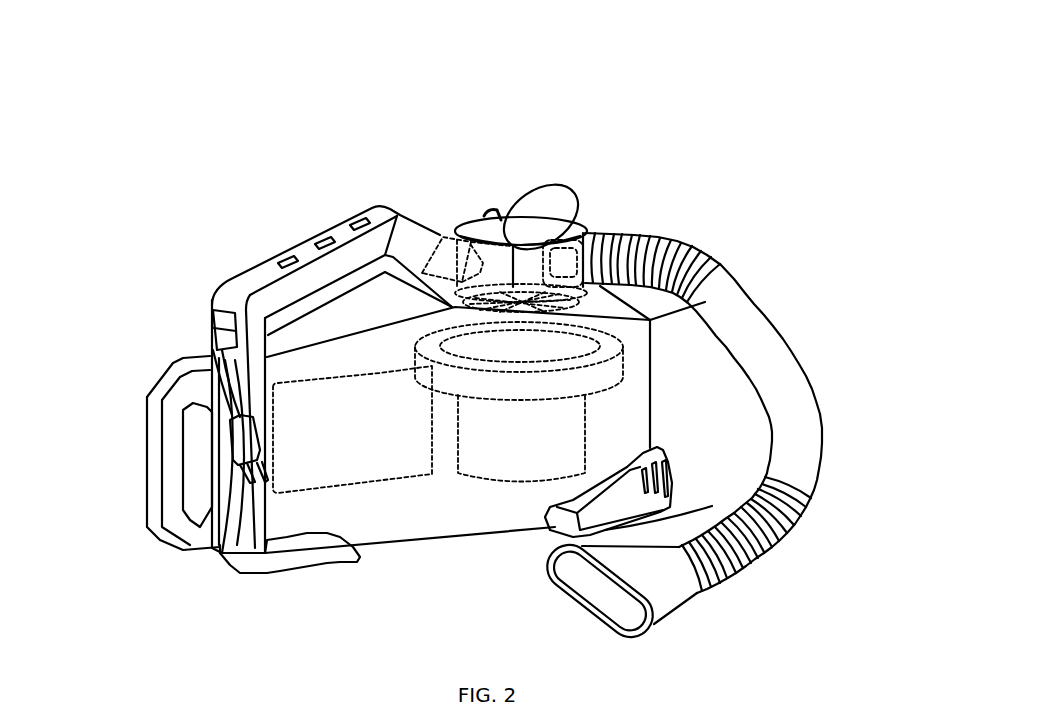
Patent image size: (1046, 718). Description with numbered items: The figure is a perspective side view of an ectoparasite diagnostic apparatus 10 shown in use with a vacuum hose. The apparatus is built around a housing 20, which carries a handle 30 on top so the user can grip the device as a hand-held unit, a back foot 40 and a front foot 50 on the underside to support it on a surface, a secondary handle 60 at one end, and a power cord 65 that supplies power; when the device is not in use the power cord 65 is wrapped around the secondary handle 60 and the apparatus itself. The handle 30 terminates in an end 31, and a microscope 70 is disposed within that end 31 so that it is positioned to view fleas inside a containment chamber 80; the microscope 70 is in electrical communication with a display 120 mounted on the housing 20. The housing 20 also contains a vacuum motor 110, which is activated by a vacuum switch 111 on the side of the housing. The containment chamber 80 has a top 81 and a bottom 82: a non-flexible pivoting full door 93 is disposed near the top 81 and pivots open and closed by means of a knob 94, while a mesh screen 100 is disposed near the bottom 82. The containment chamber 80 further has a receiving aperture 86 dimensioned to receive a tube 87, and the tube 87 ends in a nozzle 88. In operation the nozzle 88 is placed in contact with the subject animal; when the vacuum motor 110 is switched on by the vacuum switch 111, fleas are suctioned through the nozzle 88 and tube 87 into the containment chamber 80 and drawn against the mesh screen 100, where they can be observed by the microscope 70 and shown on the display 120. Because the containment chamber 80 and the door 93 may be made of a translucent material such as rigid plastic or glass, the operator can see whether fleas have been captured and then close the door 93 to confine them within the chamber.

The ectoparasite diagnostic apparatus 10 is at (480, 84).
The housing 20 is at (488, 512).
The handle 30 is at (338, 267).
The end 31 is at (412, 242).
The back foot 40 is at (320, 548).
The front foot 50 is at (627, 517).
The secondary handle 60 is at (187, 385).
The power cord 65 is at (207, 347).
The microscope 70 is at (445, 240).
The containment chamber 80 is at (751, 399).
The top 81 is at (570, 263).
The bottom 82 is at (527, 287).
The receiving aperture 86 is at (590, 262).
The tube 87 is at (778, 357).
The nozzle 88 is at (657, 573).
The non-flexible pivoting full door 93 is at (532, 218).
The knob 94 is at (485, 211).
The mesh screen 100 is at (615, 320).
The vacuum motor 110 is at (535, 438).
The vacuum switch 111 is at (208, 312).
The display 120 is at (380, 452).